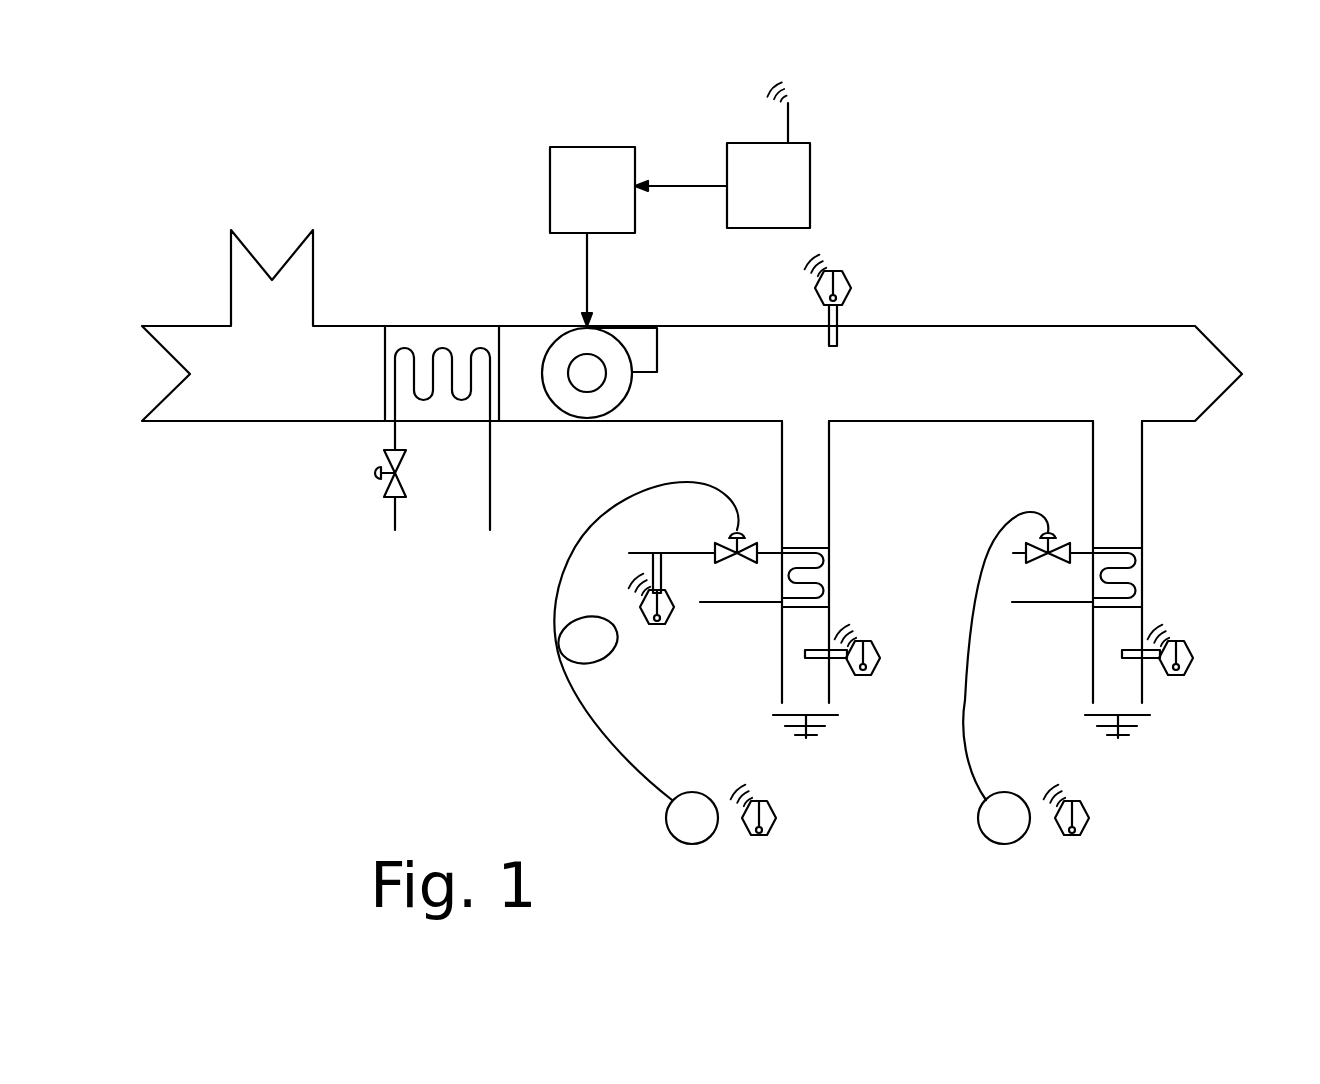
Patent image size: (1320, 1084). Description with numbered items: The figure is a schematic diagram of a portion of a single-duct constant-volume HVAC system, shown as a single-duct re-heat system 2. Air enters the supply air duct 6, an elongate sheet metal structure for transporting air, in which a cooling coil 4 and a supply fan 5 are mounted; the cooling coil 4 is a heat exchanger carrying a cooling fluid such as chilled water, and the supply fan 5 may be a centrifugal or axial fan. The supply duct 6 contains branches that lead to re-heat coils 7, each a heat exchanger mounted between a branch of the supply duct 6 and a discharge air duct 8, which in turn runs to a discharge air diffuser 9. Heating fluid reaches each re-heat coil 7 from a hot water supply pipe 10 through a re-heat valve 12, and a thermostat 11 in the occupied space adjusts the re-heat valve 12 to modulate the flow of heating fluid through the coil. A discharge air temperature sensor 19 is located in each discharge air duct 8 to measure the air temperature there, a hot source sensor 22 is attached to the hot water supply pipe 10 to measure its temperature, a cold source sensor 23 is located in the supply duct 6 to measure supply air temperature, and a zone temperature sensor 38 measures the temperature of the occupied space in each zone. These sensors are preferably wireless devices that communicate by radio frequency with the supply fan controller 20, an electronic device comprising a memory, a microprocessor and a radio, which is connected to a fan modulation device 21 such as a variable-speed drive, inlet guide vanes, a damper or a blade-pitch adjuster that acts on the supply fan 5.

The single-duct re-heat system 2 is at (448, 592).
The cooling coil 4 is at (393, 326).
The supply fan 5 is at (543, 340).
The supply air duct 6 is at (943, 326).
The re-heat coil 7 is at (830, 560).
The discharge air duct 8 is at (780, 648).
The discharge air diffuser 9 is at (823, 730).
The hot water supply pipe 10 is at (670, 553).
The thermostat 11 is at (712, 838).
The re-heat valve 12 is at (753, 543).
The discharge air temperature sensor 19 is at (873, 640).
The supply fan controller 20 is at (810, 170).
The fan modulation device 21 is at (578, 147).
The hot source sensor 22 is at (668, 620).
The cold source sensor 23 is at (843, 270).
The zone temperature sensor 38 is at (773, 832).